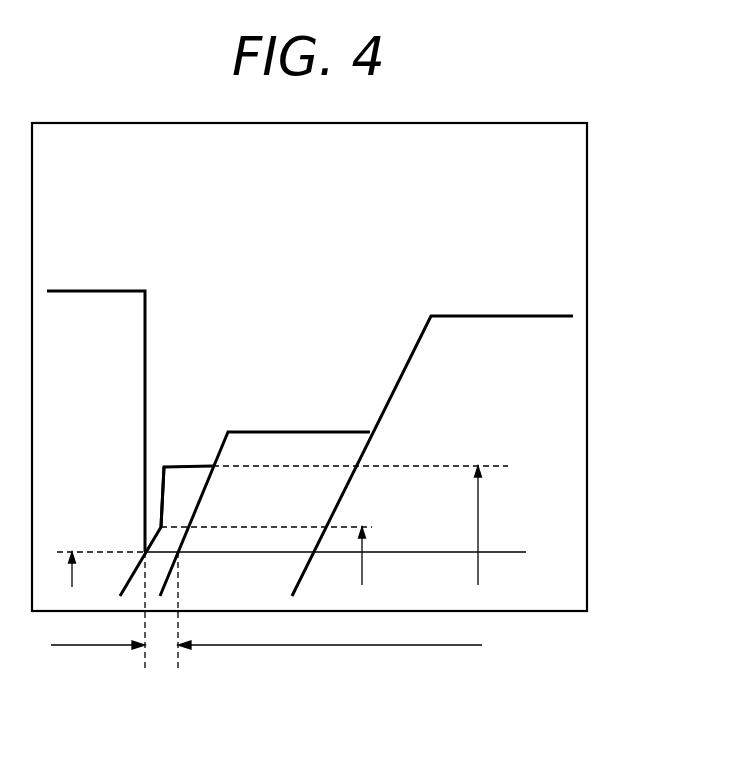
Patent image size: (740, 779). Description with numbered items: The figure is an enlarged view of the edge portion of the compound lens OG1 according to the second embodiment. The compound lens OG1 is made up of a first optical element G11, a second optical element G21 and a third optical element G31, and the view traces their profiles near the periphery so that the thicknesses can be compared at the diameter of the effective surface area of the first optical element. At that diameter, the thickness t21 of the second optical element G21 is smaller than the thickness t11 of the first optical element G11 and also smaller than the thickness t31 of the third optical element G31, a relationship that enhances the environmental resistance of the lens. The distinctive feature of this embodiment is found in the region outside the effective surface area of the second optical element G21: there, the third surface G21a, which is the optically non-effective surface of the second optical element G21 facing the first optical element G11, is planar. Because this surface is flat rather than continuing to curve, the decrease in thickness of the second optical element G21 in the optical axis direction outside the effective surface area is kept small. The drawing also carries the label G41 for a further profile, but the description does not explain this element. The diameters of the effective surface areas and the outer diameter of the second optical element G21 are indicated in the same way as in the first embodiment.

The compound lens OG1 is at (582, 113).
The first optical element G11 is at (91, 305).
The second optical element G21 is at (187, 478).
The third surface G21a is at (163, 485).
The fourth gradient waveform G41 is at (300, 447).
The third optical element G31 is at (494, 333).
The thickness of the first optical element t11 is at (98, 659).
The thickness of the second optical element t21 is at (162, 648).
The thickness of the third optical element t31 is at (330, 659).